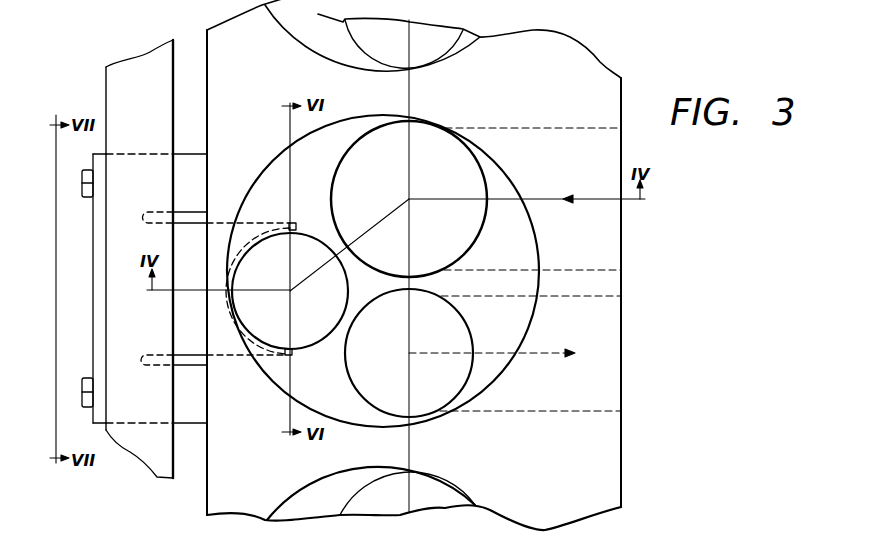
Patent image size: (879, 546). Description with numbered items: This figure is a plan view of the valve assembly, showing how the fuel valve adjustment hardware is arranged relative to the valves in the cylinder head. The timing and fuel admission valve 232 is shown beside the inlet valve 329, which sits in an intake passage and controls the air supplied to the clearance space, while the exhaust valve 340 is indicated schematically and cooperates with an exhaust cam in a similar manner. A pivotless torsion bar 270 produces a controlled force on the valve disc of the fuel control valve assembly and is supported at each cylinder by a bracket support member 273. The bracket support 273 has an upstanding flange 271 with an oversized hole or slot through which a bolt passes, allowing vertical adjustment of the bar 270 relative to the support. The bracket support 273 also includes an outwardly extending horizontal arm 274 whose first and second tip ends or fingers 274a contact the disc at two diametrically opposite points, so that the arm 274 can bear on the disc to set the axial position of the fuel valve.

The torsion bar 270 is at (124, 90).
The upstanding flange 271 is at (93, 320).
The bracket support member 273 is at (190, 424).
The horizontal arm 274 is at (243, 357).
The tip ends or fingers 274a is at (290, 223).
The timing and fuel admission valve 232 is at (338, 313).
The inlet valve 329 is at (453, 187).
The exhaust valve 340 is at (393, 362).